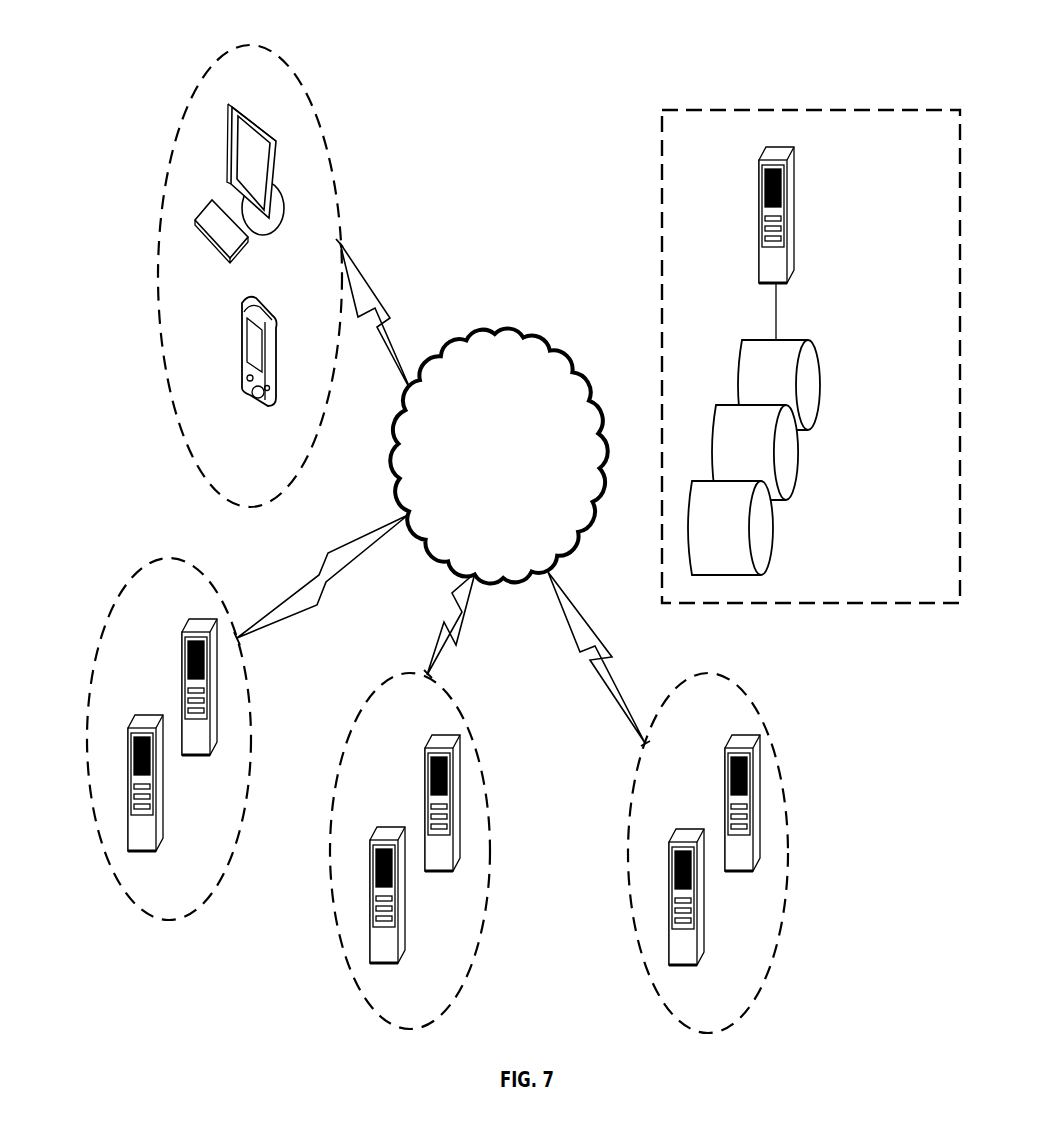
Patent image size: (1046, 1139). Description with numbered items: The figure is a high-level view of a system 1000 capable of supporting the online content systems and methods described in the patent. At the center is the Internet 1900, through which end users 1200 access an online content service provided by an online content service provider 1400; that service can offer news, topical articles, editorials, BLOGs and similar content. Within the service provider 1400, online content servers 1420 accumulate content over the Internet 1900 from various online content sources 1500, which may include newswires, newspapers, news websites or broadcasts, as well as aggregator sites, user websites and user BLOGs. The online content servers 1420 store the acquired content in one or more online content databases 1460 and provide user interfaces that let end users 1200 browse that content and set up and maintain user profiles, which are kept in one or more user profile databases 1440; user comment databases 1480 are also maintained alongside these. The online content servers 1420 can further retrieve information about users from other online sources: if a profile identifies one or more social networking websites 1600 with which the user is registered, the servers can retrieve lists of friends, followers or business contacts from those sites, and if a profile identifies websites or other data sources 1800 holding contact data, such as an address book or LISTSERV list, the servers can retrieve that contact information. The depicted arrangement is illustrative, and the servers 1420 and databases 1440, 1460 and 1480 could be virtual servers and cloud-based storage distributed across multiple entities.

The system 1000 is at (137, 99).
The end users 1200 is at (333, 152).
The online content service provider 1400 is at (654, 132).
The online content servers 1420 is at (827, 239).
The user profile databases 1440 is at (835, 385).
The online content databases 1460 is at (829, 452).
The user comment databases 1480 is at (817, 528).
The online content sources 1500 is at (792, 861).
The social networking websites 1600 is at (490, 896).
The data sources 1800 is at (94, 641).
The Internet 1900 is at (498, 455).